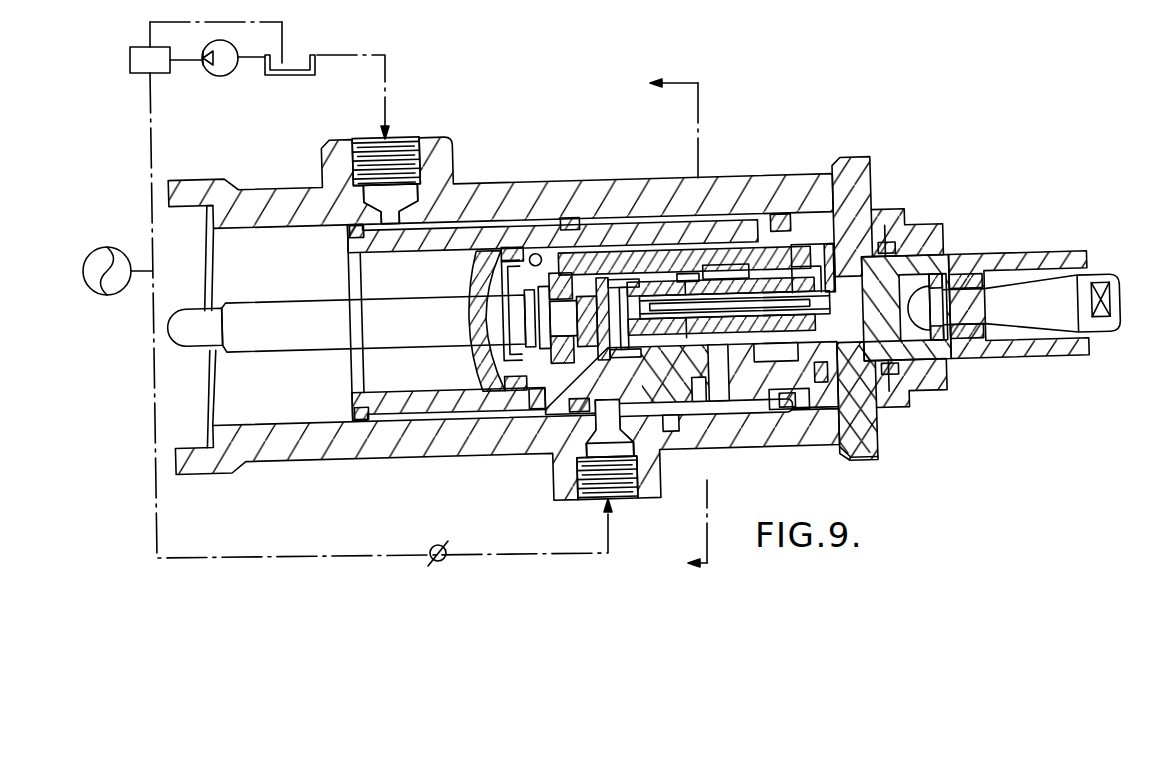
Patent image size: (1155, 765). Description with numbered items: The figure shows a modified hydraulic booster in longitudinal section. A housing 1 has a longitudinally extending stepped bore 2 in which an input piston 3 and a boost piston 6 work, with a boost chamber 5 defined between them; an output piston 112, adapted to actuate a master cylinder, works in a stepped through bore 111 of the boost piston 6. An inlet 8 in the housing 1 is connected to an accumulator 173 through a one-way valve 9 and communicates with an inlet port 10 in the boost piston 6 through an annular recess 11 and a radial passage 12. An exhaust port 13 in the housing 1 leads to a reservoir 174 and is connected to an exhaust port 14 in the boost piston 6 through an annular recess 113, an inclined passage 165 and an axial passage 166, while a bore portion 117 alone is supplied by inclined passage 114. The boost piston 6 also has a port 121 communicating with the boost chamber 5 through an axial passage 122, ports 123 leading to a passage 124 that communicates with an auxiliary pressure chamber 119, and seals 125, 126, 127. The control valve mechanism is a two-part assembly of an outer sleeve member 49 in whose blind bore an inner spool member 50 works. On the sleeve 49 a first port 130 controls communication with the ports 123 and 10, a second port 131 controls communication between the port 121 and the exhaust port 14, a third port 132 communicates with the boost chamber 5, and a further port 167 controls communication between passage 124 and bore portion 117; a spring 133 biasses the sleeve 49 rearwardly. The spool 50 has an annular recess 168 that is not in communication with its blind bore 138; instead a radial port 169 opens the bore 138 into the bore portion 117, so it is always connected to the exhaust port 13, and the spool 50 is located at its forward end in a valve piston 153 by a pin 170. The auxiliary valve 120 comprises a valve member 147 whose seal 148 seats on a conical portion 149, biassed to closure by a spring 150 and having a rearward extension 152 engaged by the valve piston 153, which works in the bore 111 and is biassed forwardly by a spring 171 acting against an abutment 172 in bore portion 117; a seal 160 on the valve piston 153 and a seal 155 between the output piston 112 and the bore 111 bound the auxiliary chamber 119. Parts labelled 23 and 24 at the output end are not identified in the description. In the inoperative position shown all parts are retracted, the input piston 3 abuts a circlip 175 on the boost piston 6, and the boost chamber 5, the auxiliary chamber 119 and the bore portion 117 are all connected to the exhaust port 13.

The housing 1 is at (858, 155).
The stepped bore 2 is at (271, 428).
The input piston 3 is at (996, 262).
The boost chamber 5 is at (869, 212).
The boost piston 6 is at (412, 410).
The inlet 8 is at (622, 497).
The one-way valve 9 is at (447, 560).
The inlet port 10 is at (697, 335).
The annular recess 11 is at (668, 422).
The radial passage 12 is at (712, 382).
The exhaust port 13 is at (405, 150).
The exhaust port 14 is at (848, 197).
The push rod 23 is at (1108, 323).
The seal 24 is at (912, 380).
The outer sleeve member 49 is at (874, 402).
The inner spool member 50 is at (906, 228).
The stepped through bore 111 is at (445, 418).
The output piston 112 is at (287, 313).
The annular recess 113 is at (509, 224).
The inclined passage 114 is at (528, 406).
The bore portion 117 is at (658, 445).
The auxiliary pressure chamber 119 is at (497, 262).
The auxiliary valve 120 is at (485, 343).
The port 121 is at (766, 402).
The axial passage 122 is at (790, 404).
The recess 123 is at (714, 300).
The passage 124 is at (580, 265).
The seal 125 is at (359, 412).
The seal 126 is at (565, 432).
The seal 127 is at (802, 402).
The first port 130 is at (779, 262).
The second port 131 is at (798, 235).
The third port 132 is at (840, 453).
The spring 133 is at (874, 428).
The blind bore 138 is at (727, 402).
The valve member 147 is at (527, 316).
The seal 148 is at (544, 321).
The conical portion 149 is at (502, 373).
The spring 150 is at (507, 300).
The rearward extension 152 is at (560, 352).
The valve piston 153 is at (617, 282).
The seal 155 is at (508, 246).
The seal 160 is at (602, 473).
The inclined passage 165 is at (560, 252).
The axial passage 166 is at (625, 296).
The port 167 is at (686, 268).
The annular recess 168 is at (733, 353).
The radial port 169 is at (680, 278).
The pin 170 is at (608, 352).
The spring 171 is at (648, 310).
The abutment 172 is at (698, 402).
The accumulator 173 is at (110, 247).
The reservoir 174 is at (288, 62).
The circlip 175 is at (876, 452).